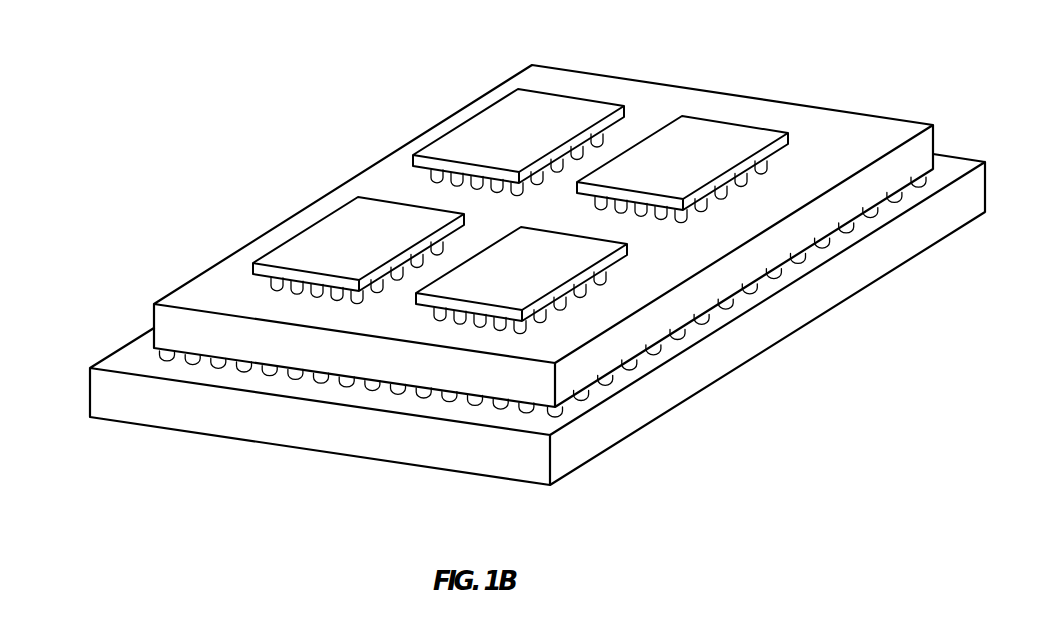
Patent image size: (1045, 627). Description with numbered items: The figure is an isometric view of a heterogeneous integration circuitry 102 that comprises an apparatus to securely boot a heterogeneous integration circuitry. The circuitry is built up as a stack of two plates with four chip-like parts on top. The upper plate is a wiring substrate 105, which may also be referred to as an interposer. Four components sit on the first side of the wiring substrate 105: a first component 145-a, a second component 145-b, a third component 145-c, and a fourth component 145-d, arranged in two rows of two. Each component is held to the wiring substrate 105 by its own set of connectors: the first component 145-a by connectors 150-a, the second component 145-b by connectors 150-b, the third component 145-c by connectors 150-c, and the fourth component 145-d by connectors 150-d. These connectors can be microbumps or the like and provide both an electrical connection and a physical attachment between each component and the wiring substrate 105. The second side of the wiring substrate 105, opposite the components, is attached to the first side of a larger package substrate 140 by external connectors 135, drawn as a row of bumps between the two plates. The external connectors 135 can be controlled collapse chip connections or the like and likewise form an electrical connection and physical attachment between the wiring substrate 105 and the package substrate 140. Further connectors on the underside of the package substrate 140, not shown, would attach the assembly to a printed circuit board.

The heterogeneous integration circuitry 102 is at (526, 293).
The wiring substrate 105 is at (162, 318).
The external connectors 135 is at (160, 352).
The package substrate 140 is at (107, 408).
The first component 145-a is at (305, 238).
The second component 145-b is at (460, 130).
The third component 145-c is at (625, 253).
The fourth component 145-d is at (787, 140).
The connectors 150-a is at (268, 283).
The connectors 150-b is at (432, 174).
The connectors 150-c is at (605, 279).
The connectors 150-d is at (765, 167).